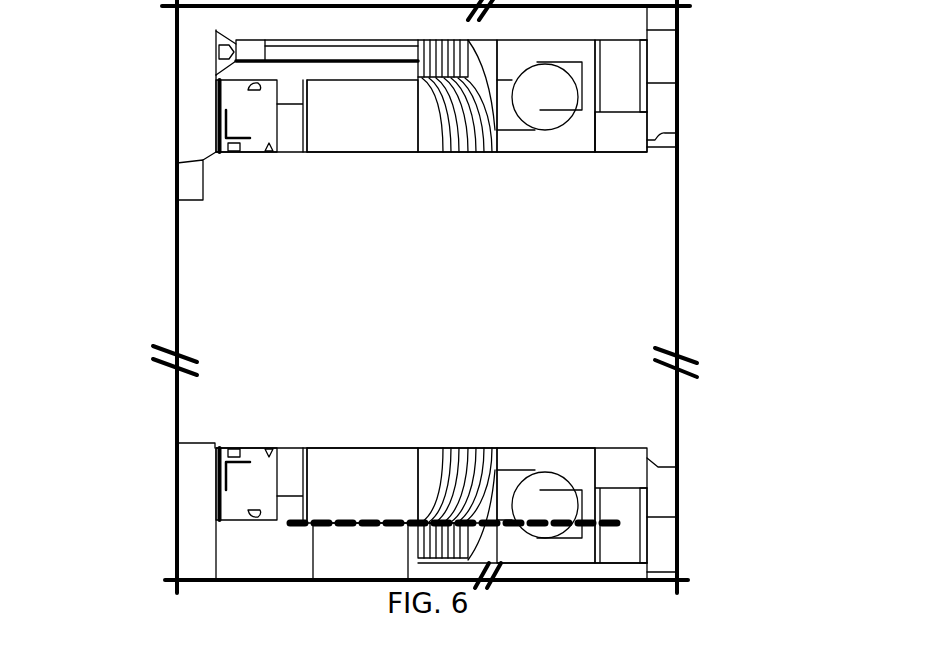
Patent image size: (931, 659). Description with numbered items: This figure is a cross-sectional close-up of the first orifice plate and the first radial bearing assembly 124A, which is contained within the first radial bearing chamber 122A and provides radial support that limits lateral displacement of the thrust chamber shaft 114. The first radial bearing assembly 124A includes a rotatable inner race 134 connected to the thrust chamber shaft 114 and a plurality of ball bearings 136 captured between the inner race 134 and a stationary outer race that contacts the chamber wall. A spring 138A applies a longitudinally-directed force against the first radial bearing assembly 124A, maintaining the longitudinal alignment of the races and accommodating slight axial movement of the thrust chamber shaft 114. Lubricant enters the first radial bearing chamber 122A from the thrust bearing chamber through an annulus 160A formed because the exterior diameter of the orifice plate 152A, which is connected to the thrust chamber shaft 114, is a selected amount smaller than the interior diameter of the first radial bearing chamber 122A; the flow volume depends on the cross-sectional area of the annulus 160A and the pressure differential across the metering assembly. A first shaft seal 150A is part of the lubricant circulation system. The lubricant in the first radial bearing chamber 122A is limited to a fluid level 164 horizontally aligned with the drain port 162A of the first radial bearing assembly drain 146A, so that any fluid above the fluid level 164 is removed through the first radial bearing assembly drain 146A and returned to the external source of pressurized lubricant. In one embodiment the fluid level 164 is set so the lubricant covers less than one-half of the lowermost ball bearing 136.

The thrust chamber shaft 114 is at (275, 270).
The first radial bearing chamber 122A is at (583, 563).
The first radial bearing assembly 124A is at (520, 426).
The inner race 134 is at (570, 132).
The ball bearings 136 is at (545, 97).
The spring 138A is at (442, 80).
The first radial bearing assembly drain 146A is at (325, 556).
The first shaft seal 150A is at (248, 118).
The orifice plate 152A is at (625, 120).
The annulus 160A is at (623, 38).
The drain port 162A is at (360, 518).
The fluid level 164 is at (612, 523).